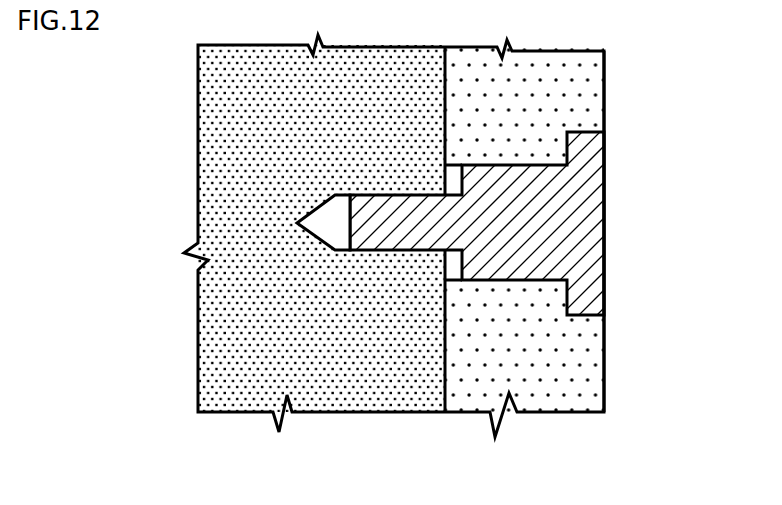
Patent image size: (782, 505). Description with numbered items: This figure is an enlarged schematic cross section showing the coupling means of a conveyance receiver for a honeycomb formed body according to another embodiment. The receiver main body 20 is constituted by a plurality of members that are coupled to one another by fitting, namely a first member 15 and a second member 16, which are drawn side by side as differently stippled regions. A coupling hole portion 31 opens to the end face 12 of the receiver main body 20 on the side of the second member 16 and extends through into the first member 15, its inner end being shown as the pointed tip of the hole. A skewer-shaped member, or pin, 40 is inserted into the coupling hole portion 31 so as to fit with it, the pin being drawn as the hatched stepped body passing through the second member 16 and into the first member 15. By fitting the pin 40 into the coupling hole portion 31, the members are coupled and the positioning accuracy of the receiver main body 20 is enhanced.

The end face 12 is at (605, 393).
The first member 15 is at (342, 392).
The second member 16 is at (478, 378).
The receiver main body 20 is at (604, 343).
The coupling hole portion 31 is at (327, 230).
The skewer-shaped member (pin) 40 is at (593, 215).